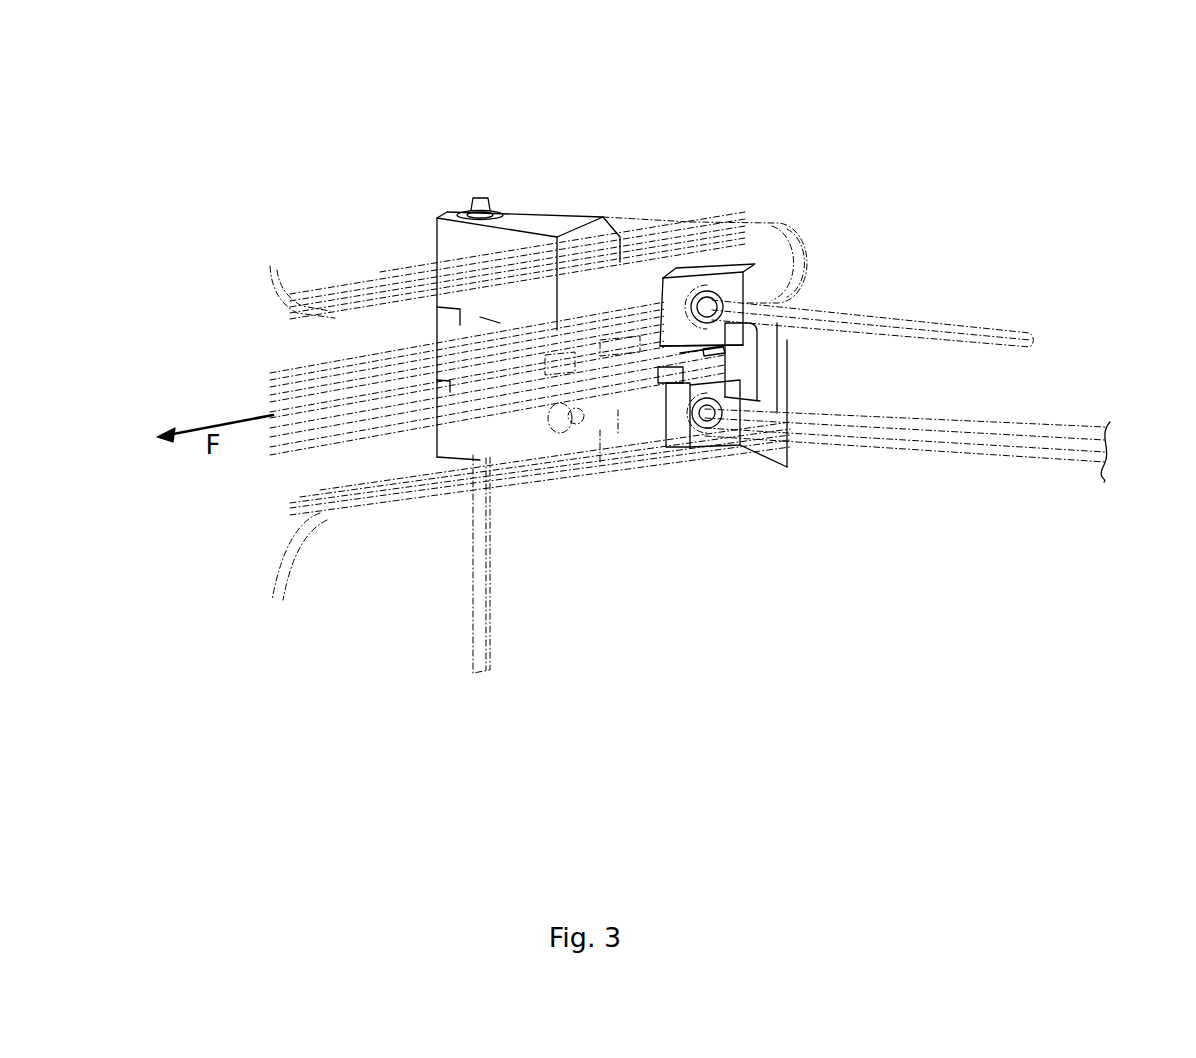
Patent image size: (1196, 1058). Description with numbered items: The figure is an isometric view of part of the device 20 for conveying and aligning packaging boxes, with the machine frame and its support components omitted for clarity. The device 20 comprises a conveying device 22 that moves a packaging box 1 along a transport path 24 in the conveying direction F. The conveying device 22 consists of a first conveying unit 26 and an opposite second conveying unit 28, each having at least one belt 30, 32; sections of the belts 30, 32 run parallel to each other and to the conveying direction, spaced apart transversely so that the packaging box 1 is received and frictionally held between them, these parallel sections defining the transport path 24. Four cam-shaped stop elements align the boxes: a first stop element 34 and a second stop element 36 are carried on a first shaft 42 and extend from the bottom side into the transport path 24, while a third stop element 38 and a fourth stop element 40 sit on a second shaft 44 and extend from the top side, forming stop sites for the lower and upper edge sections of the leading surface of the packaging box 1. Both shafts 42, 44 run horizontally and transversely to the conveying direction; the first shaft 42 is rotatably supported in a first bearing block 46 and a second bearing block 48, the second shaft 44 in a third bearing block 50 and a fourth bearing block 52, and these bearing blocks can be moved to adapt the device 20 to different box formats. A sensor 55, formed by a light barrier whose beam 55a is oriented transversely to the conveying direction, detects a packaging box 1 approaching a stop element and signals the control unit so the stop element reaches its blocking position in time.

The packaging box 1 is at (625, 352).
The device 20 is at (761, 140).
The conveying device 22 is at (368, 552).
The transport path 24 is at (395, 393).
The first conveying unit 26 is at (309, 268).
The second conveying unit 28 is at (420, 537).
The belt 30 is at (411, 289).
The belt 32 is at (320, 493).
The first stop element 34 is at (557, 362).
The second stop element 36 is at (664, 378).
The third stop element 38 is at (560, 307).
The fourth stop element 40 is at (663, 343).
The first shaft 42 is at (952, 437).
The second shaft 44 is at (916, 328).
The first bearing block 46 is at (503, 440).
The second bearing block 48 is at (727, 430).
The third bearing block 50 is at (520, 217).
The fourth bearing block 52 is at (717, 270).
The sensor 55 is at (747, 380).
The beam 55a is at (707, 352).